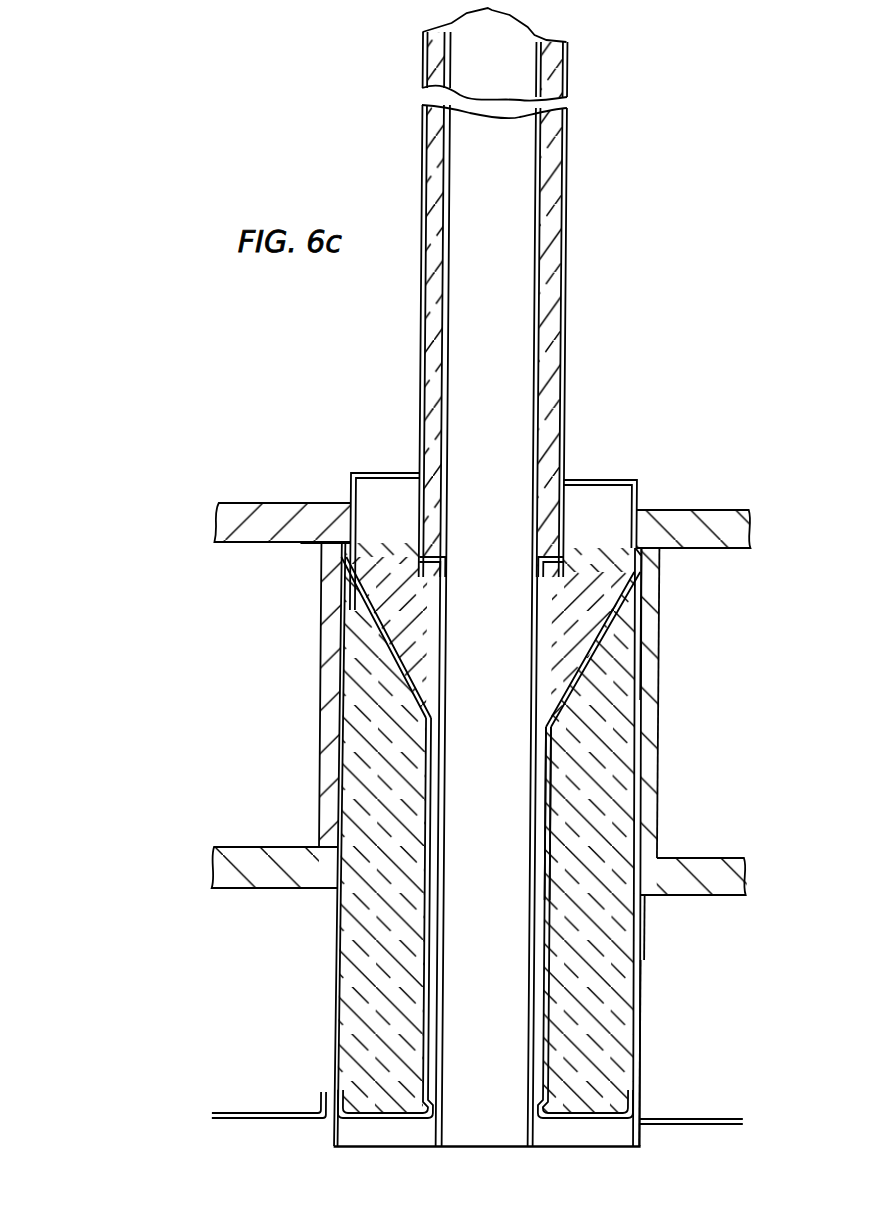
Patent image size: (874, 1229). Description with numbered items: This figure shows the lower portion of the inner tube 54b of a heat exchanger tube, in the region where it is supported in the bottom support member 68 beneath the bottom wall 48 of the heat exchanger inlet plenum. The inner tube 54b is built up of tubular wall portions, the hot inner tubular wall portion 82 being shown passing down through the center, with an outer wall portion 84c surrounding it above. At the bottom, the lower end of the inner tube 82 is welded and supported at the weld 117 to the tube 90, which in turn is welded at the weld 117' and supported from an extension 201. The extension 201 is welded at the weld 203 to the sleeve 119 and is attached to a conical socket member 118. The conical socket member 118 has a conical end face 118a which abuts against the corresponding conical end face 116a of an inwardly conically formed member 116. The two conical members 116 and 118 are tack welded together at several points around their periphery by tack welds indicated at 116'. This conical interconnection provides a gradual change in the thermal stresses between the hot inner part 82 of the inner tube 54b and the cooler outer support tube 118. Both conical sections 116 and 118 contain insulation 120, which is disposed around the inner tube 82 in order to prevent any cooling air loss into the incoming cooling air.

The inner tube 54b is at (550, 374).
The tube inner wall 84c is at (563, 432).
The inner tubular wall portion 82 is at (530, 672).
The inwardly conically formed member 116 is at (528, 590).
The bottom wall 48 is at (743, 517).
The insulation 120 is at (612, 828).
The bracket wedge region 116a is at (605, 597).
The conical end face 118a is at (577, 680).
The tack welds 116' is at (723, 623).
The conical socket member 118 is at (628, 730).
The sleeve 119 is at (649, 794).
The tube 90 is at (422, 1032).
The bottom support member 68 is at (735, 860).
The weld 203 is at (650, 900).
The extension 201 is at (646, 1043).
The weld 117 is at (426, 1141).
The weld 117' is at (689, 1149).